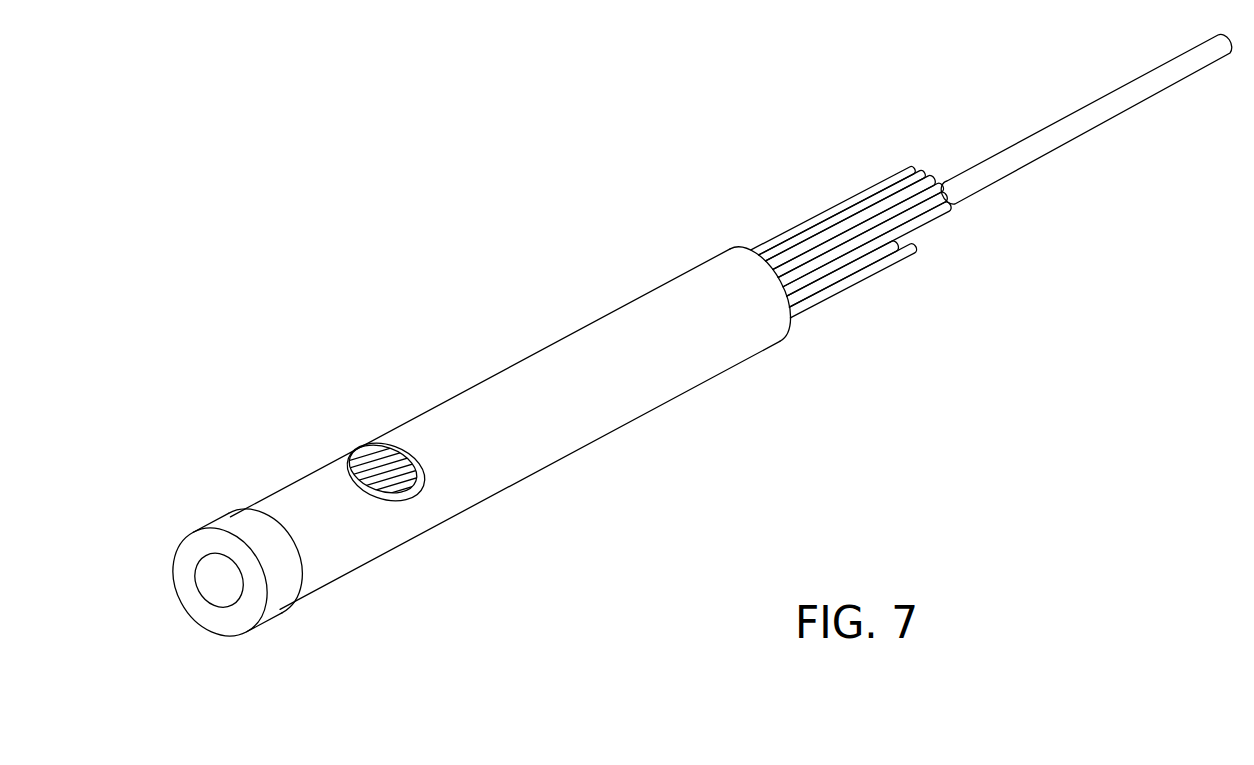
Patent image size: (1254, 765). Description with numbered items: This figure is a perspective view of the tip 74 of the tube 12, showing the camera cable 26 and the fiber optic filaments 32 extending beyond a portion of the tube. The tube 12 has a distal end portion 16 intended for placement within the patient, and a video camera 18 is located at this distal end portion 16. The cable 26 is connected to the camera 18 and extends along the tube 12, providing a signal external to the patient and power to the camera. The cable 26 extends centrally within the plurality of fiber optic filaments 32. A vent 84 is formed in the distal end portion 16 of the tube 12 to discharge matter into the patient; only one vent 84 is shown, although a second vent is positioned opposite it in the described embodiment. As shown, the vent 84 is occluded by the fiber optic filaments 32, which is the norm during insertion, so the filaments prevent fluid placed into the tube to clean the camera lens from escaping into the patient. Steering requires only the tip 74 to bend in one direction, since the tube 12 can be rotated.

The tube 12 is at (470, 336).
The distal end portion 16 is at (443, 510).
The video camera 18 is at (210, 594).
The cable 26 is at (1113, 110).
The fiber optic filaments 32 is at (827, 212).
The tip 74 is at (220, 525).
The vent 84 is at (370, 448).